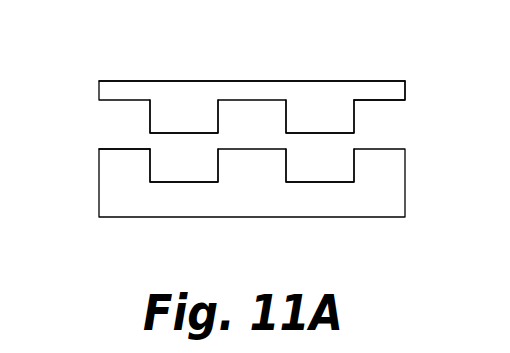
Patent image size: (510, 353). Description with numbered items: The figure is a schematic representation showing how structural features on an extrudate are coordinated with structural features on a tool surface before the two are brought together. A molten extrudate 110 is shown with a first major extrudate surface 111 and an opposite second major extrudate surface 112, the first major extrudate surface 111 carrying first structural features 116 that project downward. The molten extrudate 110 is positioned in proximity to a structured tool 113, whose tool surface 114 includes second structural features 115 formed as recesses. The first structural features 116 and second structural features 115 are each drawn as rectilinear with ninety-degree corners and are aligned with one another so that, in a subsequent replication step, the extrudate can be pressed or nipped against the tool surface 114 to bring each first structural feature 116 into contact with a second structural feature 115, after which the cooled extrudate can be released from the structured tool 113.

The molten extrudate 110 is at (105, 88).
The first major extrudate surface 111 is at (383, 100).
The second major extrudate surface 112 is at (145, 80).
The structured tool 113 is at (108, 188).
The tool surface 114 is at (118, 148).
The second structural features 115 is at (192, 183).
The first structural features 116 is at (191, 117).